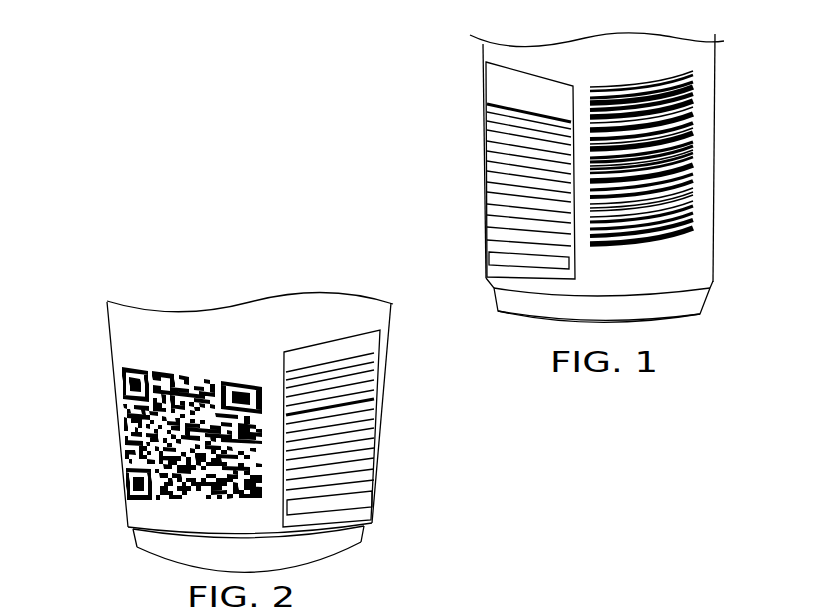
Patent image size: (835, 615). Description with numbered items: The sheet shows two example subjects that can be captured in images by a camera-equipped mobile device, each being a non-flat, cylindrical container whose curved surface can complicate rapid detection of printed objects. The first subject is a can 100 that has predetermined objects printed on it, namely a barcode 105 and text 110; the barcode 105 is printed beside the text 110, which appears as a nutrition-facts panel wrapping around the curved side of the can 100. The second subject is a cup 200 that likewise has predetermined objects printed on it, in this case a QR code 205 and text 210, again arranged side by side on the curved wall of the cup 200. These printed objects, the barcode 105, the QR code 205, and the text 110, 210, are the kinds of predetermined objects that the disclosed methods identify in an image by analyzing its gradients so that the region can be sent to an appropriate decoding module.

In FIG. 1, the can 100 is at (690, 53).
In FIG. 1, the barcode 105 is at (700, 173).
In FIG. 1, the text 110 is at (503, 119).
In FIG. 2, the cup 200 is at (135, 338).
In FIG. 2, the QR code 205 is at (128, 437).
In FIG. 2, the text 210 is at (357, 460).